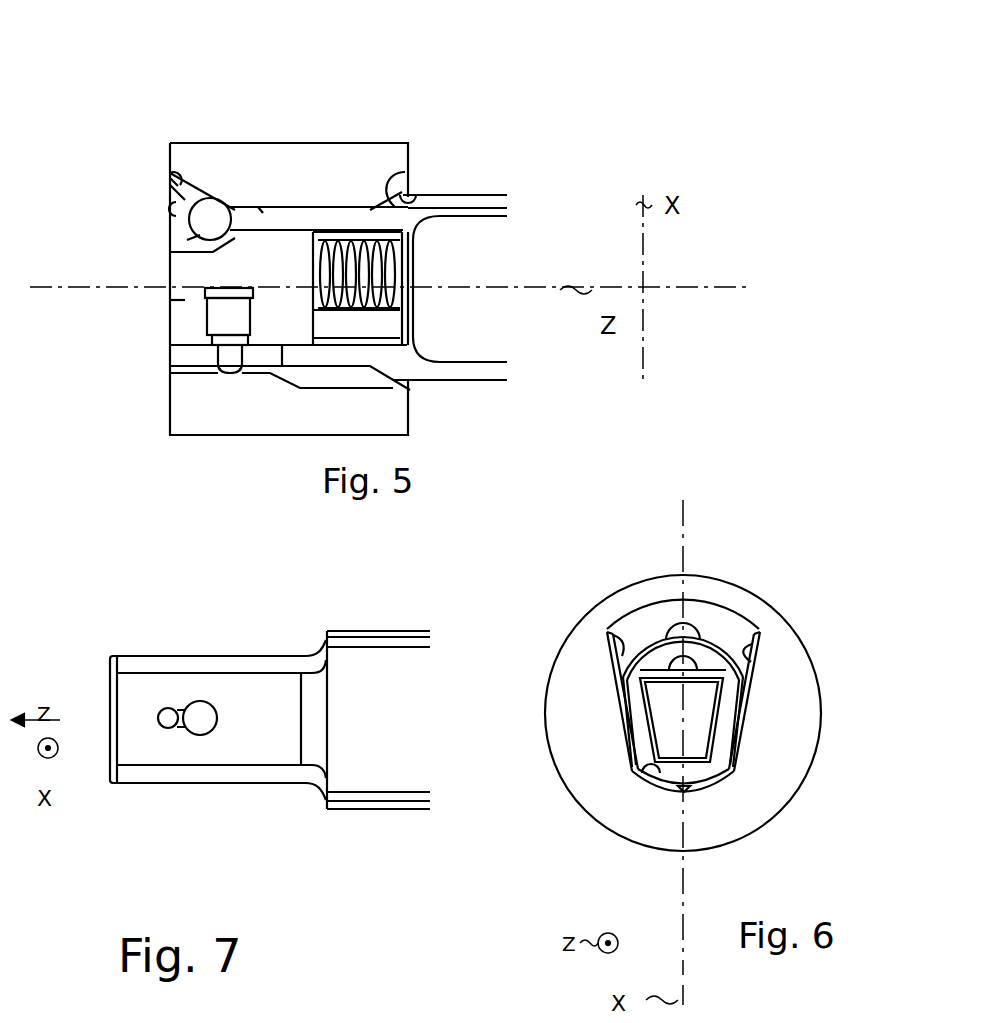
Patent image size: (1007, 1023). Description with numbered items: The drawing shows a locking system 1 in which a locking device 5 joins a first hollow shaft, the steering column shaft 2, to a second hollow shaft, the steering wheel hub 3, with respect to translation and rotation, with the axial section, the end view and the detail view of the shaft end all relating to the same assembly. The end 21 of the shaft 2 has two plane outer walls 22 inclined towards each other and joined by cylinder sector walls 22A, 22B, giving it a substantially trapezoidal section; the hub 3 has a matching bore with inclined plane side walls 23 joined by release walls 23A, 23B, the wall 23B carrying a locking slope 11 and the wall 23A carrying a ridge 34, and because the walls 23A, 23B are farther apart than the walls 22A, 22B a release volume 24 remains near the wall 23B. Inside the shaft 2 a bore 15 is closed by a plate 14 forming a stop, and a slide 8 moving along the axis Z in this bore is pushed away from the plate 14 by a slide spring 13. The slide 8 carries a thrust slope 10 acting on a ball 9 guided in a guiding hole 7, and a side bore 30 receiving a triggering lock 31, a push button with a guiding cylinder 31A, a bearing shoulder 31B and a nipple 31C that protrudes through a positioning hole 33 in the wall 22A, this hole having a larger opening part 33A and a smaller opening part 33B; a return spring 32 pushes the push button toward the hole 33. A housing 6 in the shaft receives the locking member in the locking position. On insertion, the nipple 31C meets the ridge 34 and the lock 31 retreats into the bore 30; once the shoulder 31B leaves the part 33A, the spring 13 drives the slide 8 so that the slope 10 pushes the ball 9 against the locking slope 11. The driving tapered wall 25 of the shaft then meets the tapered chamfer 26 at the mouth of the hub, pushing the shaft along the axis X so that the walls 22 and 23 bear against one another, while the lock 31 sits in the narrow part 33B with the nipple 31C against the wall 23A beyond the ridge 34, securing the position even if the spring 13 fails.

In FIG. 5, the locking system 1 is at (514, 129).
In FIG. 5, the first shaft 2 is at (473, 372).
In FIG. 7, the first shaft 2 is at (384, 673).
In FIG. 6, the first shaft 2 is at (683, 713).
In FIG. 5, the second shaft 3 is at (342, 155).
In FIG. 5, the locking device 5 is at (170, 455).
In FIG. 5, the housing 6 is at (148, 165).
In FIG. 5, the guiding hole 7 is at (176, 206).
In FIG. 5, the slide 8 is at (178, 302).
In FIG. 5, the ball 9 is at (206, 214).
In FIG. 5, the thrust slope 10 is at (176, 233).
In FIG. 5, the locking slope 11 is at (170, 183).
In FIG. 5, the slide spring 13 is at (380, 268).
In FIG. 5, the plate 14 is at (406, 320).
In FIG. 5, the bore 15 is at (395, 342).
In FIG. 7, the end of the shaft 21 is at (312, 600).
In FIG. 6, the end of the shaft 21 is at (683, 701).
In FIG. 7, the plane outer walls 22 is at (238, 661).
In FIG. 6, the plane outer walls 22 is at (742, 717).
In FIG. 7, the cylinder sector wall 22A is at (278, 747).
In FIG. 6, the cylinder sector wall 22A is at (707, 778).
In FIG. 6, the cylinder sector wall 22B is at (713, 642).
In FIG. 6, the plane side walls 23 is at (614, 636).
In FIG. 6, the release wall 23A is at (633, 778).
In FIG. 5, the release wall 23B is at (265, 210).
In FIG. 6, the release wall 23B is at (703, 608).
In FIG. 6, the release volume 24 is at (645, 626).
In FIG. 5, the driving tapered wall 25 is at (405, 172).
In FIG. 5, the tapered chamfer 26 is at (418, 218).
In FIG. 5, the side bore 30 is at (205, 290).
In FIG. 5, the triggering lock 31 is at (140, 356).
In FIG. 5, the guiding cylinder 31A is at (207, 325).
In FIG. 5, the bearing shoulder 31B is at (207, 345).
In FIG. 5, the nipple 31C is at (218, 369).
In FIG. 7, the nipple 31C is at (168, 710).
In FIG. 5, the return spring 32 is at (244, 290).
In FIG. 7, the positioning hole 33 is at (213, 805).
In FIG. 7, the larger opening part 33A is at (210, 737).
In FIG. 7, the smaller opening part 33B is at (178, 735).
In FIG. 5, the ridge 34 is at (260, 369).